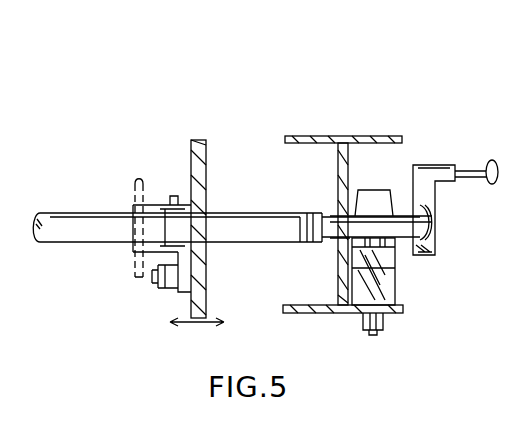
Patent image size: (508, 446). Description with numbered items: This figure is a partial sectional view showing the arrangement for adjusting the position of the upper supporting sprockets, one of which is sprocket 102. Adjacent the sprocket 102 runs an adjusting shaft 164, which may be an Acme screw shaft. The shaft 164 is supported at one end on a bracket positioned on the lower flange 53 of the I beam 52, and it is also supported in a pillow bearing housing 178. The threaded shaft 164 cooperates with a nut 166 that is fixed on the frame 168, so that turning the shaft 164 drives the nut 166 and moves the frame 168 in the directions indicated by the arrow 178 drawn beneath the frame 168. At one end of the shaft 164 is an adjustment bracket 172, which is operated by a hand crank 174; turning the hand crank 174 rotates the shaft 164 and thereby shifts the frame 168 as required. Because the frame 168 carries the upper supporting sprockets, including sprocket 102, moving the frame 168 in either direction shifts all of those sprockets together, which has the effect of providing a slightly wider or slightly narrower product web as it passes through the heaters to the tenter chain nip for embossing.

The adjusting shaft 164 is at (72, 221).
The nut 166 is at (136, 200).
The sprocket 102 is at (182, 193).
The frame 168 is at (207, 150).
The pillow bearing housing 178 is at (198, 325).
The I beam 52 is at (343, 137).
The lower flange 53 is at (338, 314).
The adjustment bracket 172 is at (447, 262).
The hand crank 174 is at (491, 160).